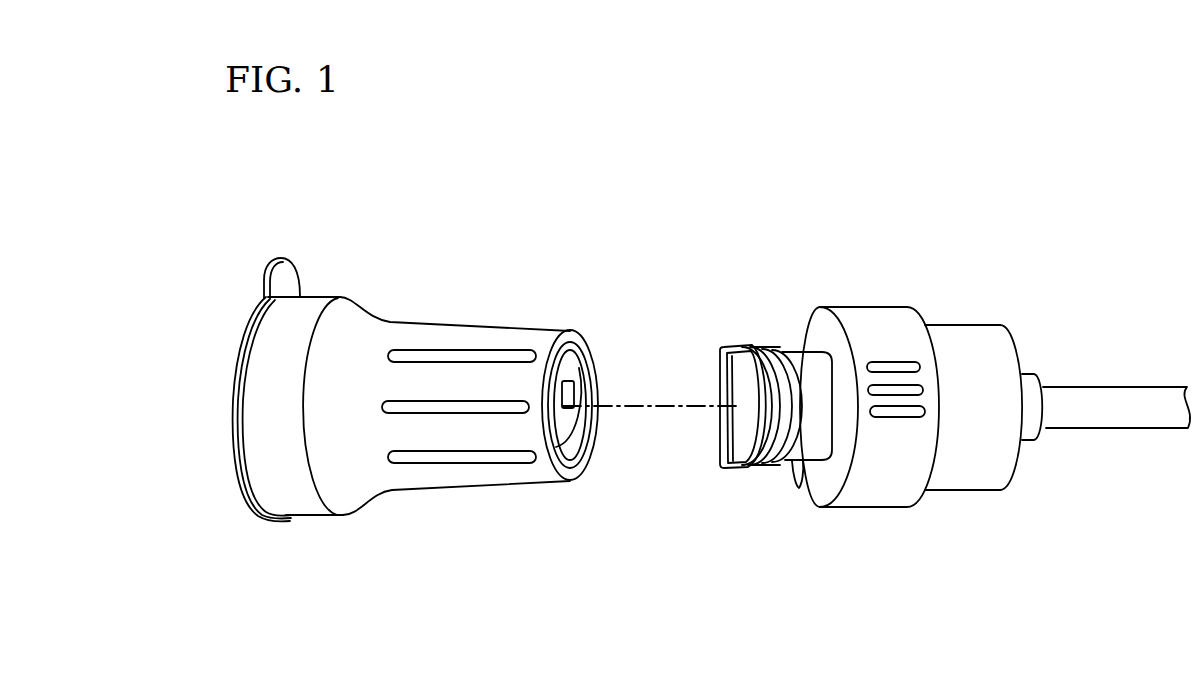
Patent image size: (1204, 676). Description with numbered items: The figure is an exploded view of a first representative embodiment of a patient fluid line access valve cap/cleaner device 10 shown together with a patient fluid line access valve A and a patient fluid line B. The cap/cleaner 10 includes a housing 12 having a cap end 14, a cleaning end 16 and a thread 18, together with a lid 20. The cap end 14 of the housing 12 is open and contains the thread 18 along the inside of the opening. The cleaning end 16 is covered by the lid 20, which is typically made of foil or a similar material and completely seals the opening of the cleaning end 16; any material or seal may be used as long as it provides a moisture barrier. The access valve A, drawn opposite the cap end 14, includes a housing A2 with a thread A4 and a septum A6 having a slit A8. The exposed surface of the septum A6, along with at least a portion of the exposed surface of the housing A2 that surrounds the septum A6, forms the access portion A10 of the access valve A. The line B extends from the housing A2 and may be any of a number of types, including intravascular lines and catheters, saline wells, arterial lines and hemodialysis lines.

The cap/cleaner device 10 is at (485, 422).
The housing 12 is at (359, 474).
The cap end 14 is at (505, 340).
The cleaning end 16 is at (300, 502).
The thread 18 is at (568, 381).
The lid 20 is at (287, 277).
The patient fluid line access valve A is at (845, 405).
The housing A2 is at (872, 328).
The thread A4 is at (800, 493).
The septum A6 is at (749, 469).
The slit A8 is at (752, 410).
The access portion A10 is at (740, 408).
The patient fluid line B is at (1107, 404).